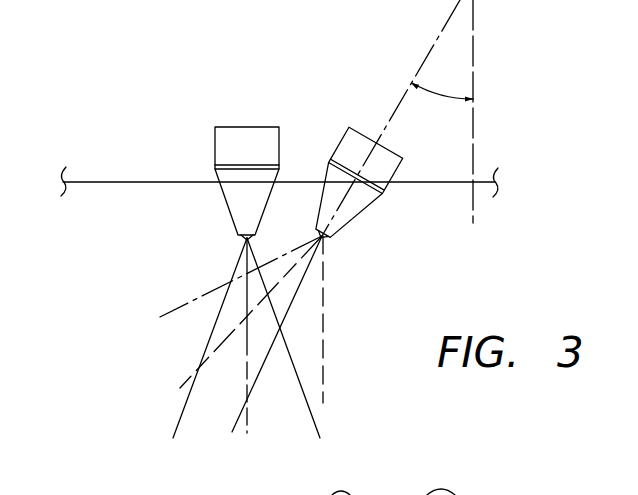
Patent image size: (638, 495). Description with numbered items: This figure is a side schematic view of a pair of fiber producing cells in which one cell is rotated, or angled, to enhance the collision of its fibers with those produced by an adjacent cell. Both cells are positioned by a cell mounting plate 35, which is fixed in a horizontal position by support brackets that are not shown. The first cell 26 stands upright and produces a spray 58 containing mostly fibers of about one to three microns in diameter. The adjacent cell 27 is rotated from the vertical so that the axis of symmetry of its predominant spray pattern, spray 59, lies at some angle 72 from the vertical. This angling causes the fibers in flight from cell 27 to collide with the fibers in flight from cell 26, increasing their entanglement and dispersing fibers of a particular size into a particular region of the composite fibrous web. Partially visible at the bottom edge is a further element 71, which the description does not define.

The fiber producing cell 26 is at (227, 150).
The fiber producing cell 27 is at (385, 160).
The cell mounting plate 35 is at (118, 182).
The spray 58 is at (213, 323).
The spray 59 is at (325, 267).
The component of adjacent figure 71 is at (492, 494).
The angle 72 is at (443, 92).